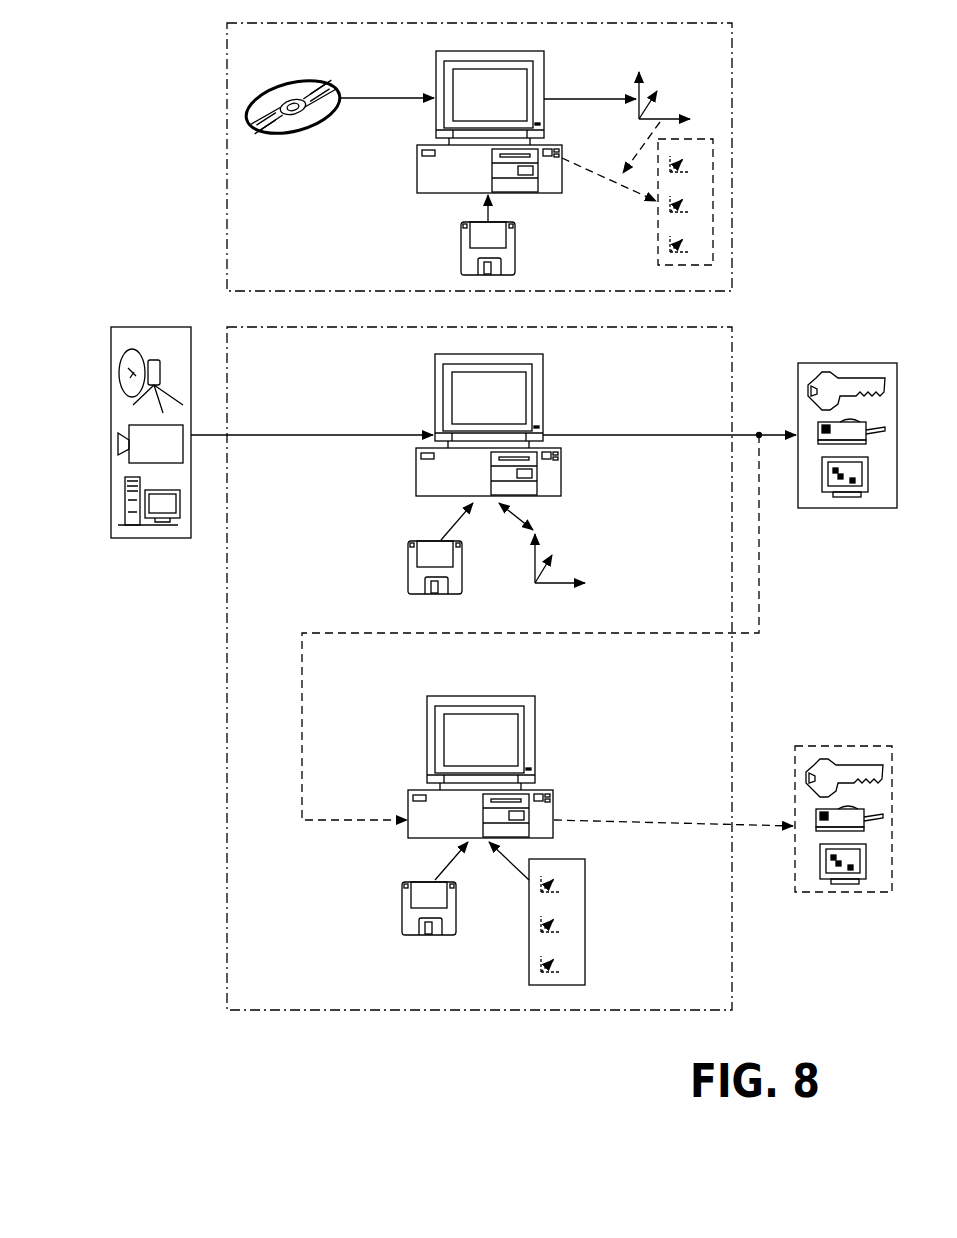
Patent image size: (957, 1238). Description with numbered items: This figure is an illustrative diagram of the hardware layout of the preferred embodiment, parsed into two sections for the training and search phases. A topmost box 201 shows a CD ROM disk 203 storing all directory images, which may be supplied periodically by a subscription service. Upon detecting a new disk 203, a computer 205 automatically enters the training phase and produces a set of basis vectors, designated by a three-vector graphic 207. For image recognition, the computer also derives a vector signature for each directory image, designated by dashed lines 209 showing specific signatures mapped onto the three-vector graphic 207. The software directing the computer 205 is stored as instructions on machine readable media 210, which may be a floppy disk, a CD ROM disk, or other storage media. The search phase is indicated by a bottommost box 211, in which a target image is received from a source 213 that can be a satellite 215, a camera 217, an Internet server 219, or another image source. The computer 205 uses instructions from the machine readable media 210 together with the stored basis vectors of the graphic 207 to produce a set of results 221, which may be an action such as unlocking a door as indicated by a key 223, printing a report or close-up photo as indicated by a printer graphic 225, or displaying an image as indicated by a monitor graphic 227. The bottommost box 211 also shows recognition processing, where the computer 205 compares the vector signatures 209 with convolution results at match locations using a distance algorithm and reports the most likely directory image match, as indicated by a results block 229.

The topmost box 201 is at (228, 158).
The CD ROM disk 203 is at (275, 133).
The computer 205 is at (417, 193).
The three-vector graphic 207 is at (638, 97).
The dashed lines 209 is at (658, 202).
The machine readable media 210 is at (408, 560).
The bottommost box 211 is at (228, 325).
The source 213 is at (152, 538).
The satellite 215 is at (122, 370).
The camera 217 is at (117, 445).
The Internet server 219 is at (125, 495).
The results 221 is at (845, 508).
The key 223 is at (818, 383).
The printer graphic 225 is at (818, 435).
The monitor graphic 227 is at (820, 490).
The results block 229 is at (795, 892).